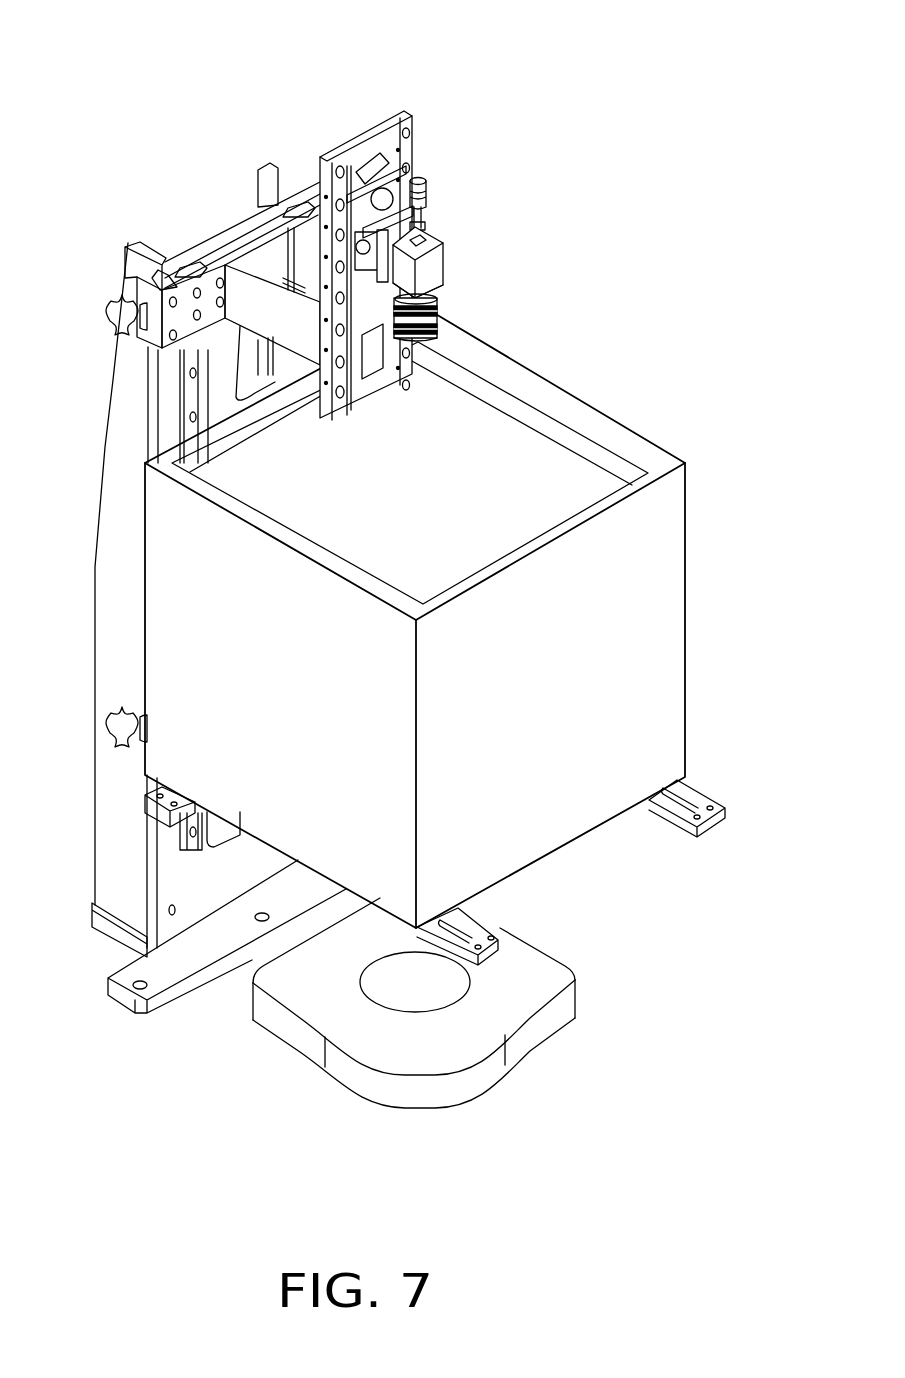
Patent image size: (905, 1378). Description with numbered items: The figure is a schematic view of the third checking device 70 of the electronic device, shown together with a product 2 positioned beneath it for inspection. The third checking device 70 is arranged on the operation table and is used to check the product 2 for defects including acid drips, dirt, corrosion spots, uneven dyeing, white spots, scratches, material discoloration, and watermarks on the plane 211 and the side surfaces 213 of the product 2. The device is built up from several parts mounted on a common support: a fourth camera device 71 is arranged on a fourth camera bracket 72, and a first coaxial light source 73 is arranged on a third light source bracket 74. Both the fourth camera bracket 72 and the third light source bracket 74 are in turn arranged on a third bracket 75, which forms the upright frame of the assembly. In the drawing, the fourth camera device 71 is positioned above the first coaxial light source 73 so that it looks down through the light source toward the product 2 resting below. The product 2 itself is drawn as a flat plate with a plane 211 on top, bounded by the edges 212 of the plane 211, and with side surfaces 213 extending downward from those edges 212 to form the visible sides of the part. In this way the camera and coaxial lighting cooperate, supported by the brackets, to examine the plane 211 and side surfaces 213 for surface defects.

The third checking device 70 is at (246, 60).
The fourth camera device 71 is at (430, 265).
The fourth camera bracket 72 is at (398, 193).
The first coaxial light source 73 is at (660, 606).
The third light source bracket 74 is at (695, 800).
The third bracket 75 is at (135, 268).
The product 2 is at (482, 1013).
The plane 211 is at (533, 965).
The edges of the plane 212 is at (567, 990).
The side surfaces 213 is at (458, 1076).